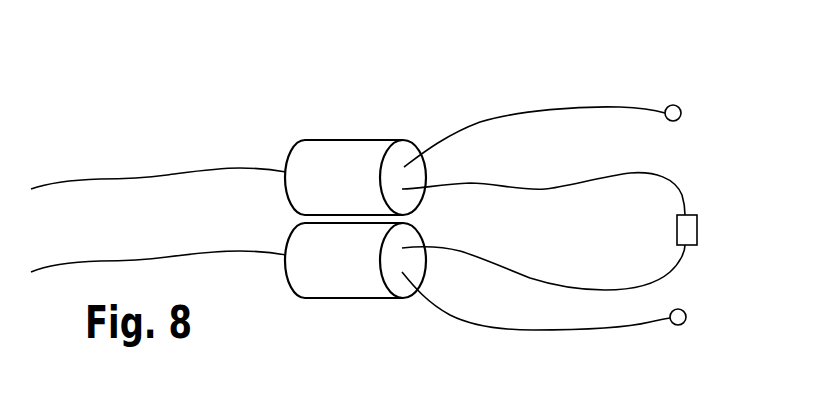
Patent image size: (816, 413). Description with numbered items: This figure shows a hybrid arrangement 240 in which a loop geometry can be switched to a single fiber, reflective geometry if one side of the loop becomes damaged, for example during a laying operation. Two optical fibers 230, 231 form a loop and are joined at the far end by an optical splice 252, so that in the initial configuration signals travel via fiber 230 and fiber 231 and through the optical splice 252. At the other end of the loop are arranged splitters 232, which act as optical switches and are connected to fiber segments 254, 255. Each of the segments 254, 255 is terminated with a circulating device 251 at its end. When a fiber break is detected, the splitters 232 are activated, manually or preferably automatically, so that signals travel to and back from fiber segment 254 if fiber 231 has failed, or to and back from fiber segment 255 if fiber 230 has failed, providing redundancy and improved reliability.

The optical fiber 230 is at (157, 178).
The optical fiber 231 is at (185, 258).
The splitter 232 is at (344, 153).
The fluid circuit 240 is at (247, 116).
The circulating device 251 is at (681, 116).
The optical splice 252 is at (697, 232).
The fiber segment 254 is at (548, 110).
The fiber segment 255 is at (545, 330).